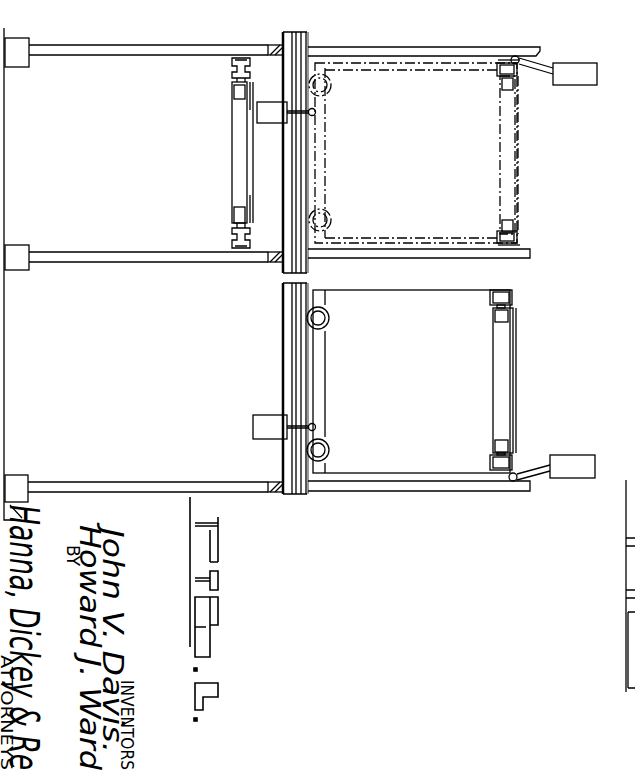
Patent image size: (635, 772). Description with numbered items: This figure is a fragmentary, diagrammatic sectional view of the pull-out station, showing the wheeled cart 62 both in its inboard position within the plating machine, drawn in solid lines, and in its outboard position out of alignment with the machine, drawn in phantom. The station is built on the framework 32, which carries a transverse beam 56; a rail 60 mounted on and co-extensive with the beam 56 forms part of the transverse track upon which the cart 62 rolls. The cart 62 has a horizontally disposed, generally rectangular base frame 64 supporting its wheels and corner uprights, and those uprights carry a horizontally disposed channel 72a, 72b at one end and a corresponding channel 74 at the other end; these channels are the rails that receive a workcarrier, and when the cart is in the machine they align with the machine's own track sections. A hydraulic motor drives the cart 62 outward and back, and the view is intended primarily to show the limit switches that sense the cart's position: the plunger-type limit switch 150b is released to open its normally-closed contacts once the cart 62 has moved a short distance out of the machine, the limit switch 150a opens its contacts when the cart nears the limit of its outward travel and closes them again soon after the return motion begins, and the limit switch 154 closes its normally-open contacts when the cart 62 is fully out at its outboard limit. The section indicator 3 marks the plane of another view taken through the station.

The section line 3- 3 is at (432, 45).
The framework 32 is at (377, 45).
The transverse beam 56 is at (300, 172).
The rail 60 is at (306, 134).
The wheeled cart 62 is at (374, 424).
The base frame 64 is at (374, 226).
The channel 72a is at (497, 397).
The channel 72b is at (514, 141).
The channel 74 is at (498, 70).
The limit switch LSQ2 150a is at (272, 123).
The limit switch LSQ1 150b is at (267, 415).
The limit switch LSF 154 is at (593, 80).